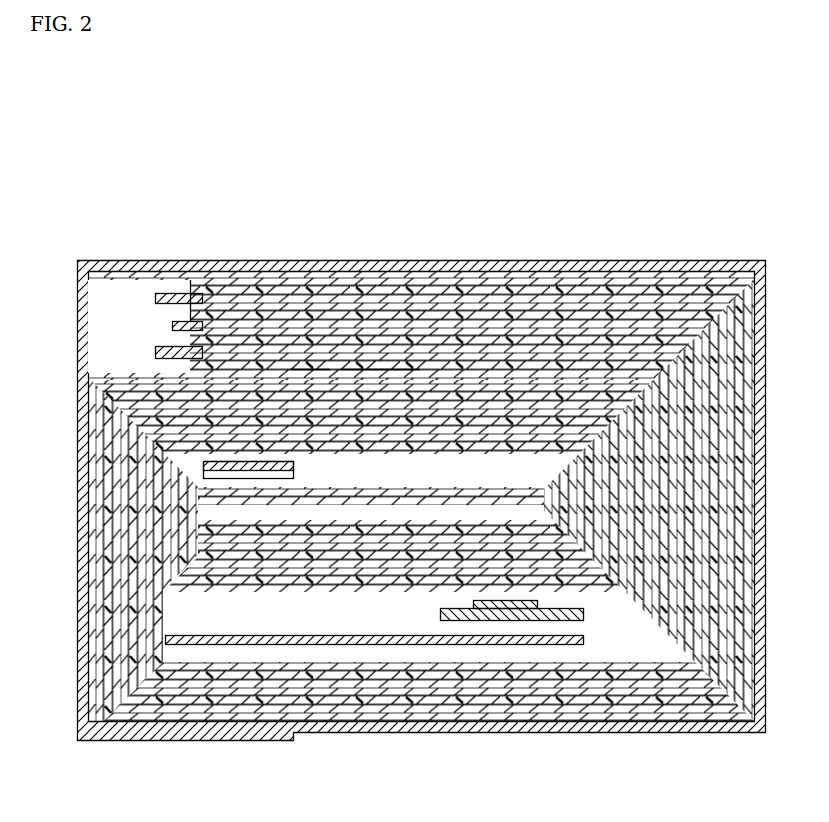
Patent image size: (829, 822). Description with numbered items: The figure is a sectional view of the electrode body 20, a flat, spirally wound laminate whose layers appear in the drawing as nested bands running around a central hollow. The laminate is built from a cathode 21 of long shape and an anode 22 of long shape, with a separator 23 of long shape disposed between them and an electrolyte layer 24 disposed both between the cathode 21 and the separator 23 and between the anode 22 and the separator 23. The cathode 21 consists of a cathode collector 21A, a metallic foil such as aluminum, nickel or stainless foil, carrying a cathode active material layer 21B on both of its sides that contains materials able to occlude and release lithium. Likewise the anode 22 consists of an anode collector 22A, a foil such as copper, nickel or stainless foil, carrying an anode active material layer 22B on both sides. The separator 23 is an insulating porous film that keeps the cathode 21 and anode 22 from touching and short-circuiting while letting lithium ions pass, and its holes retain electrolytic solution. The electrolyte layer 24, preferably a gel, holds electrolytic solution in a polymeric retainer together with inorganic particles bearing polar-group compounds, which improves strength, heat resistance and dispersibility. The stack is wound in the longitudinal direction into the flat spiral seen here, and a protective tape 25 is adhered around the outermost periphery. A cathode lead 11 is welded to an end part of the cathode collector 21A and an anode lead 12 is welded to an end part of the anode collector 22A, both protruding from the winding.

The electrode body 20 is at (567, 107).
The cathode 21 is at (184, 253).
The cathode collector 21A is at (161, 263).
The cathode active material layer 21B is at (237, 337).
The anode 22 is at (411, 196).
The anode collector 22A is at (308, 372).
The anode active material layer 22B is at (407, 367).
The separator 23 is at (545, 320).
The electrolyte layer 24 is at (662, 340).
The protective tape 25 is at (728, 263).
The cathode lead 11 is at (236, 478).
The anode lead 12 is at (510, 608).